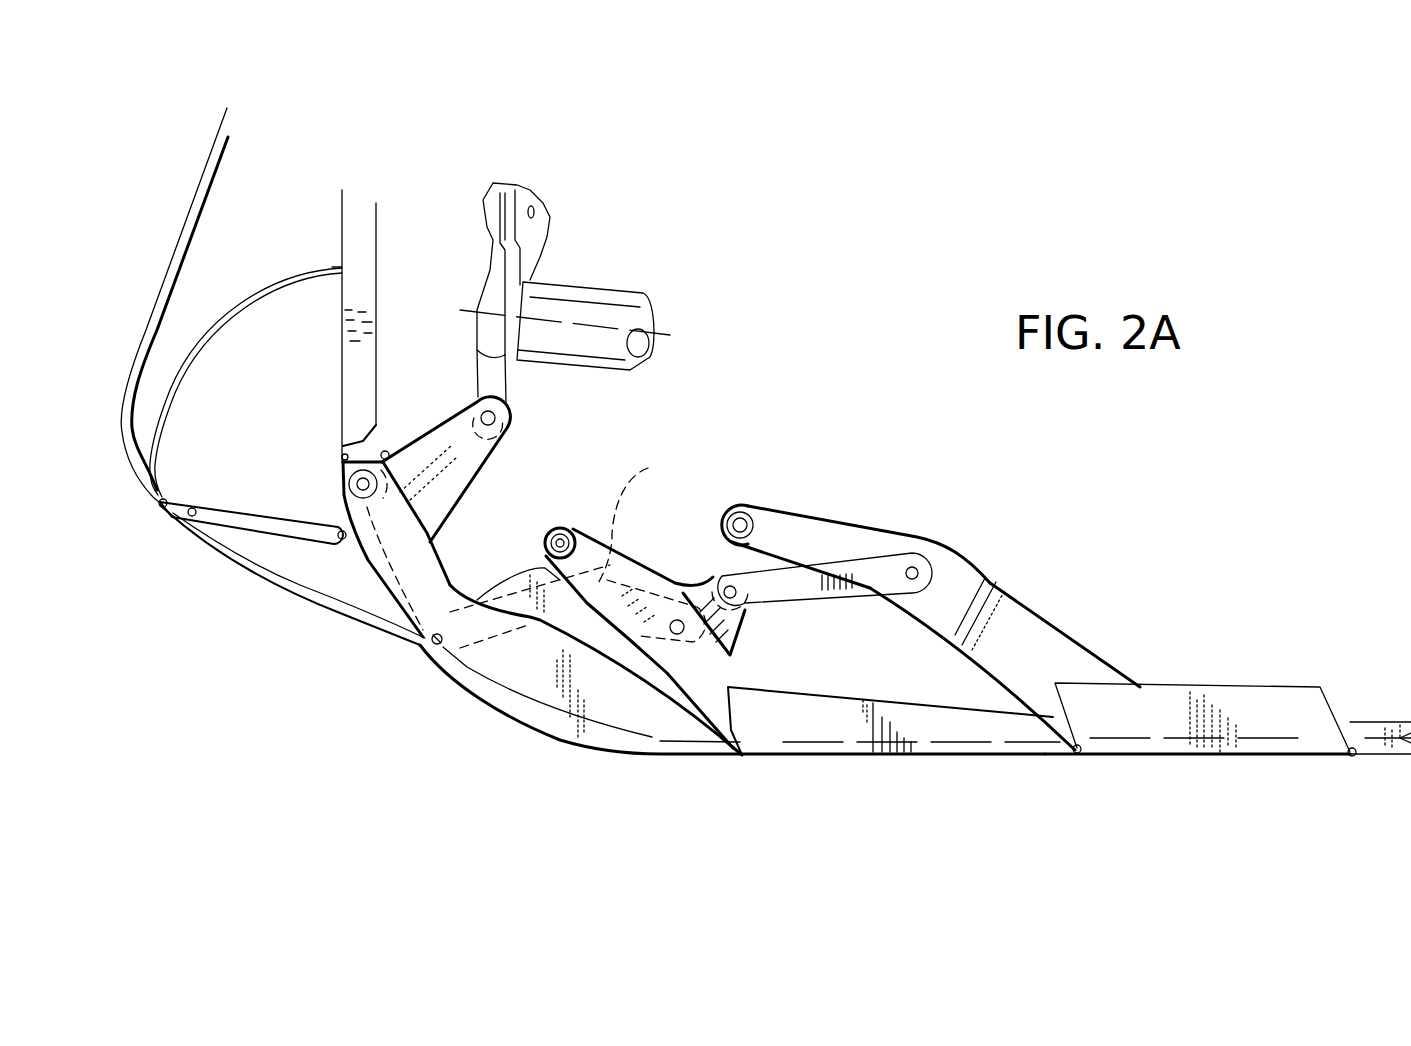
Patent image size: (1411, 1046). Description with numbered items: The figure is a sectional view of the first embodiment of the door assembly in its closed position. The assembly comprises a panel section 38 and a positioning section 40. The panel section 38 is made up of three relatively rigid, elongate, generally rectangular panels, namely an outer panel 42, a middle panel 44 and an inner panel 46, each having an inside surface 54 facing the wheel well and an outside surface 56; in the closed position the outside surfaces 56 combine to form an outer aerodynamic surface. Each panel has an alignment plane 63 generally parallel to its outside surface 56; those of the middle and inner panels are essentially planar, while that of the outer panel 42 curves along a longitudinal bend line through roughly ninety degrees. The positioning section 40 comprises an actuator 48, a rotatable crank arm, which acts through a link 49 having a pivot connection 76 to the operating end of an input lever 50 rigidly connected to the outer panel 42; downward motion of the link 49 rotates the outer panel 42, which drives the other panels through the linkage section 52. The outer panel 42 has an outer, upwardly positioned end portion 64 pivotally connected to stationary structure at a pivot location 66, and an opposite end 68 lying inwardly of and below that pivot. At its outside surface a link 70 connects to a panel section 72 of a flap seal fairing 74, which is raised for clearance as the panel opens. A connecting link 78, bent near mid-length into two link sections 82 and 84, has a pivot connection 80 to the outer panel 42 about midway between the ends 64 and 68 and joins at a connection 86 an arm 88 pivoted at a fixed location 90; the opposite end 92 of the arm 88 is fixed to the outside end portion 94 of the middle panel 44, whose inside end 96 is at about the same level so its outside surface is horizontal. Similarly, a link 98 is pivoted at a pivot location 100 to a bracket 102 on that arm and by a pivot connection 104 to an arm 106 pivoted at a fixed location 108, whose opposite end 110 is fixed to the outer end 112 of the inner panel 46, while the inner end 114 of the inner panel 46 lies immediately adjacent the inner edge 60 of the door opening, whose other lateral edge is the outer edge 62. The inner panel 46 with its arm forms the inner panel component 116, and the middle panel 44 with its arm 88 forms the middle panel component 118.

The panel section 38 is at (1028, 795).
The positioning section 40 is at (740, 450).
The outer panel 42 is at (467, 693).
The middle panel 44 is at (910, 733).
The inner panel 46 is at (1180, 753).
The actuator 48 is at (545, 243).
The link 49 is at (497, 367).
The input lever 50 is at (473, 453).
The linkage section 52 is at (990, 546).
The inside surface 54 is at (890, 697).
The outside surface 56 is at (447, 680).
The inner edge 60 is at (1330, 745).
The outer edge 62 is at (383, 445).
The alignment plane 63 is at (540, 712).
The end portion 64 is at (380, 443).
The pivot location 66 is at (345, 487).
The opposite end 68 is at (713, 760).
The link 70 is at (268, 525).
The panel section 72 is at (247, 577).
The flap seal fairing 74 is at (194, 230).
The pivot connection 76 is at (503, 415).
The connecting link 78 is at (547, 580).
The pivot connection 80 is at (430, 645).
The link section 82 is at (495, 598).
The link section 84 is at (651, 548).
The connection 86 is at (730, 652).
The arm 88 is at (652, 572).
The fixed location 90 is at (560, 538).
The opposite end 92 is at (717, 700).
The outside end portion 94 is at (750, 727).
The inside end 96 is at (1053, 730).
The link 98 is at (853, 575).
The pivot location 100 is at (727, 585).
The bracket 102 is at (747, 625).
The pivot connection 104 is at (913, 565).
The arm 106 is at (1020, 623).
The fixed location 108 is at (748, 515).
The opposite end 110 is at (1105, 682).
The outer end 112 is at (1098, 725).
The footrest extension edge 114 is at (1318, 750).
The inner panel component 116 is at (836, 518).
The middle panel component 118 is at (851, 694).